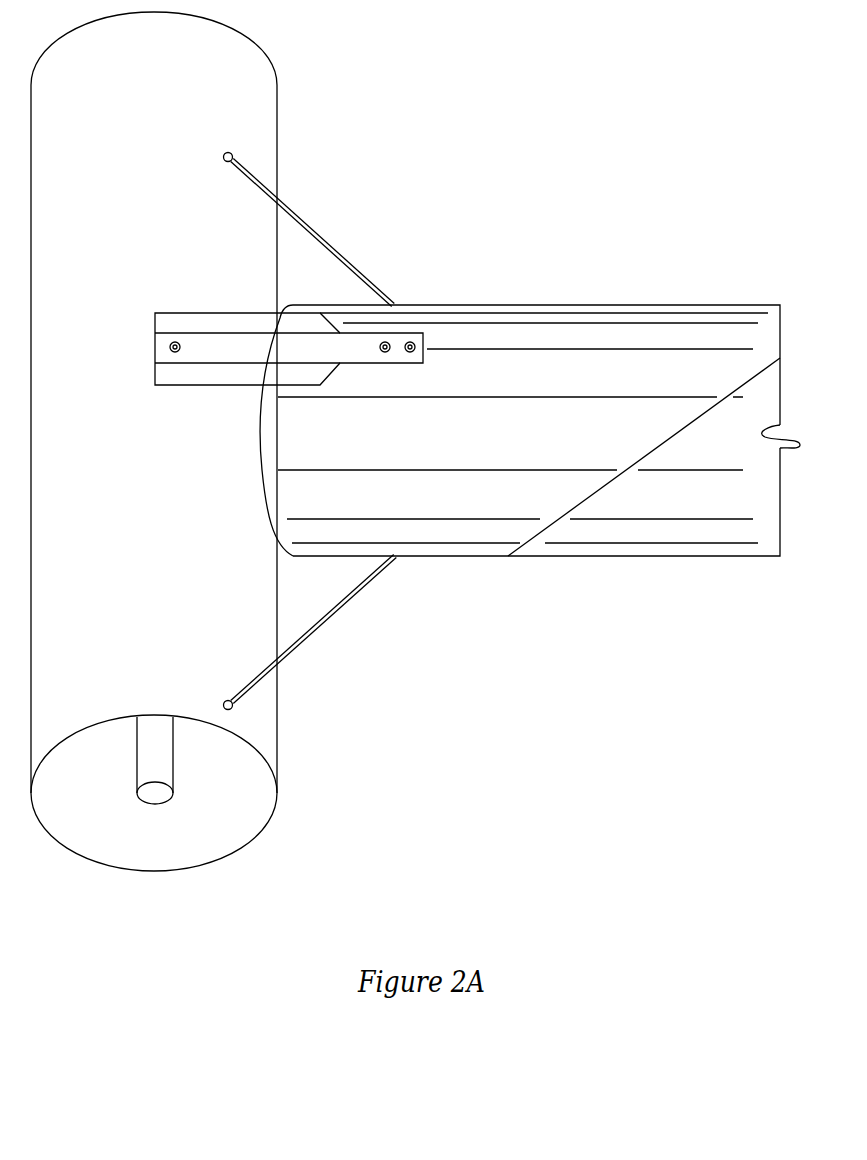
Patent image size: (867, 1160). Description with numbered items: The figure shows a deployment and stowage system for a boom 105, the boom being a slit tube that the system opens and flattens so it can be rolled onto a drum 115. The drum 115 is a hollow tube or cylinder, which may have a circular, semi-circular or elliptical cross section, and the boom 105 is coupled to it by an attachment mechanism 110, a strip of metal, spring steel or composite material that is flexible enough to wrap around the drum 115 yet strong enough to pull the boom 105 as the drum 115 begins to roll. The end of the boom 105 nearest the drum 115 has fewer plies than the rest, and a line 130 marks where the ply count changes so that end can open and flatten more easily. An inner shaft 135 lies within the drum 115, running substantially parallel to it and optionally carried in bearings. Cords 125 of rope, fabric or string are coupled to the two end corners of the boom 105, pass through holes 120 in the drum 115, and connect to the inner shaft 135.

The boom 105 is at (535, 365).
The attachment mechanism 110 is at (175, 325).
The drum 115 is at (87, 583).
The holes 120 is at (231, 152).
The cords 125 is at (335, 250).
The line 130 is at (672, 435).
The inner shaft 135 is at (162, 795).